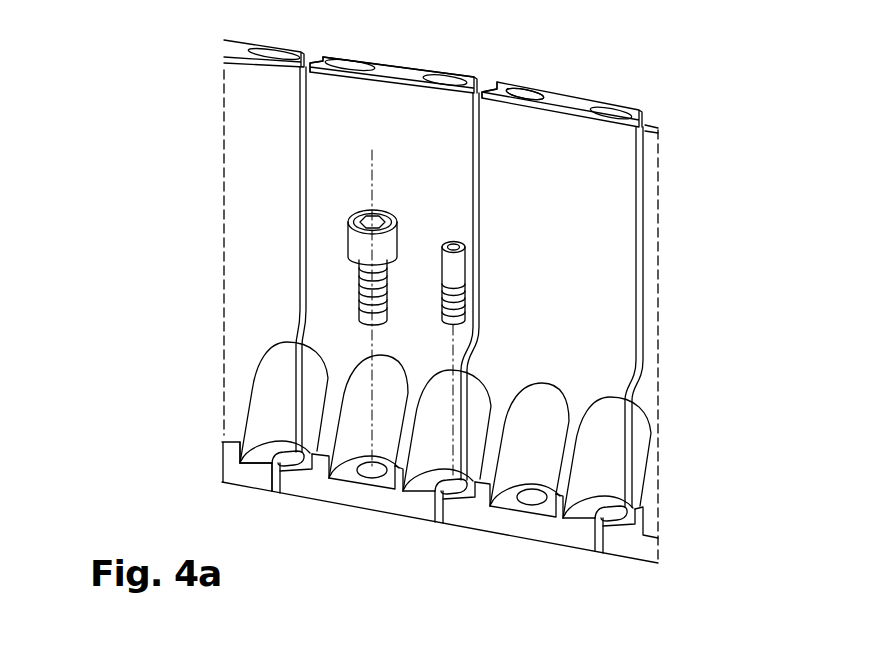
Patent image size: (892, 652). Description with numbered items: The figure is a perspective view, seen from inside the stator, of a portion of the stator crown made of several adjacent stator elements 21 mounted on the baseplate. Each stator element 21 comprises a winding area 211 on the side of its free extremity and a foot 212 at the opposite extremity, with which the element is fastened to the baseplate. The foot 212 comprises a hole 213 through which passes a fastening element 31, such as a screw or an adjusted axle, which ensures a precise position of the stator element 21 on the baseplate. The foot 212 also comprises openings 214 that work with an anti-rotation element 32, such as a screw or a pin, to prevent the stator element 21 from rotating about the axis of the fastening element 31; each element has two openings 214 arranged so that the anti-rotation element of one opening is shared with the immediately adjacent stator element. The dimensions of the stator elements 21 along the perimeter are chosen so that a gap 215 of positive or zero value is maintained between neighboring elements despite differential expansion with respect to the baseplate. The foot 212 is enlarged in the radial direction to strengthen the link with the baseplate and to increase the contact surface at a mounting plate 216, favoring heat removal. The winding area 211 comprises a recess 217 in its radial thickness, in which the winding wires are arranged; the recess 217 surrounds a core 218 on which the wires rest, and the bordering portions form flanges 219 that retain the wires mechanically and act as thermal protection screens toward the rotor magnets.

The stator element 21 is at (318, 174).
The winding area 211 is at (730, 130).
The foot 212 is at (730, 382).
The hole 213 is at (356, 478).
The opening 214 is at (254, 465).
The gap 215 is at (318, 55).
The mounting plate 216 is at (497, 530).
The recess 217 is at (447, 80).
The core 218 is at (398, 68).
The flanges 219 is at (515, 87).
The fastening element 31 is at (352, 237).
The anti-rotation element 32 is at (455, 262).